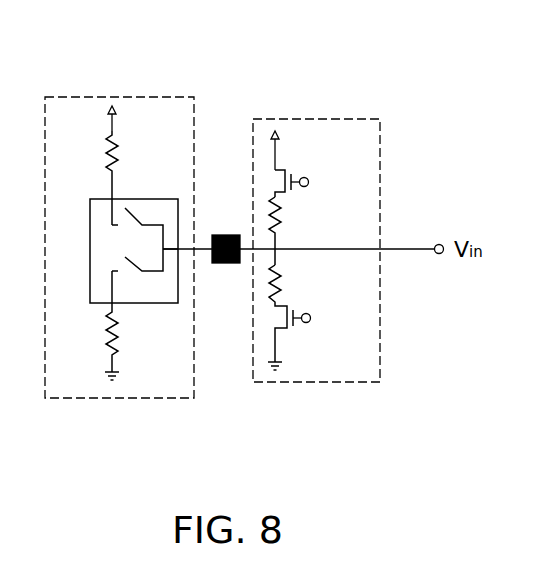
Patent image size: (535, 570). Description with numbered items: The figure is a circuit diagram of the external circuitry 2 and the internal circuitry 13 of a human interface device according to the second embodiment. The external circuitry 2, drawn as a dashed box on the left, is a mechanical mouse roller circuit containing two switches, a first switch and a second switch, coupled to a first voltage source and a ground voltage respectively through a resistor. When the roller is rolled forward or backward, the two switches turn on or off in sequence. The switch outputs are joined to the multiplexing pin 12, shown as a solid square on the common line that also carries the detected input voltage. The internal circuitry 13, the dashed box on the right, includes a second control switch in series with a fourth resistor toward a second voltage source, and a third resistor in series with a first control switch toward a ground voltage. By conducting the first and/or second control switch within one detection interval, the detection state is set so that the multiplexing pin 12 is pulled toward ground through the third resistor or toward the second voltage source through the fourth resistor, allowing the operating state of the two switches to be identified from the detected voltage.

The external circuitry 2 is at (138, 97).
The multiplexing pin 12 is at (224, 263).
The internal circuitry 13 is at (338, 119).